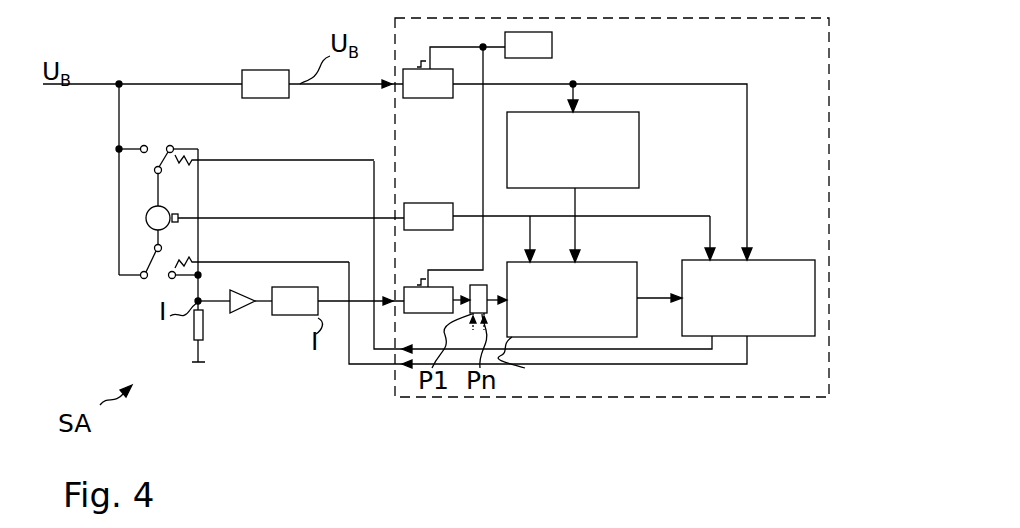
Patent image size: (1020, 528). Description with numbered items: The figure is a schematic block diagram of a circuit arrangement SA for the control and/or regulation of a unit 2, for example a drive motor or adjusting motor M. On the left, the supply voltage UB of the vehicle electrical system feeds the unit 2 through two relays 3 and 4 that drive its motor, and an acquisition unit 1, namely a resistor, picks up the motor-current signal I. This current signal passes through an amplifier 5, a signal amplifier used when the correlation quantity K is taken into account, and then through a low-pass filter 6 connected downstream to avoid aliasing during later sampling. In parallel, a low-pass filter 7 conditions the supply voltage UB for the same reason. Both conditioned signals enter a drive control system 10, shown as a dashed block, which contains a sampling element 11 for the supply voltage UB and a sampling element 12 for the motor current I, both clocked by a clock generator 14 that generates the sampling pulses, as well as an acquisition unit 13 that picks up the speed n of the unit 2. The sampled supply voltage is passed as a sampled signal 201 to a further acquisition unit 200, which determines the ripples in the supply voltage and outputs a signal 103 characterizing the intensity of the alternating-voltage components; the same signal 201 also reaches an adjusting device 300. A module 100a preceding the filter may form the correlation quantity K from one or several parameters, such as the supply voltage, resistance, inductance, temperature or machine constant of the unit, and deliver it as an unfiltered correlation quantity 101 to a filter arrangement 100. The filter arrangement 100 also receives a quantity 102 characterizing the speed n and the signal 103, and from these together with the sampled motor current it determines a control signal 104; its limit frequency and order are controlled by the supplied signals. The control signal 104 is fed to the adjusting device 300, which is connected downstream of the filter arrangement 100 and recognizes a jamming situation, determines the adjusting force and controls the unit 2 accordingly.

The acquisition unit 1 is at (192, 331).
The unit 2 is at (152, 209).
The relay 3 is at (253, 165).
The relay 4 is at (245, 270).
The amplifier 5 is at (253, 306).
The low-pass filter 6 is at (338, 301).
The low-pass filter 7 is at (322, 85).
The drive control system 10 is at (828, 70).
The sampling element 11 is at (454, 73).
The sampling element 12 is at (246, 217).
The acquisition unit 13 is at (557, 217).
The clock generator 14 is at (516, 46).
The filter arrangement 100 is at (603, 317).
The module 100a is at (484, 276).
The unfiltered correlation quantity 101 is at (529, 366).
The quantity characterizing the speed 102 is at (535, 246).
The signal characterizing the intensity of the alternating-voltage components 103 is at (576, 246).
The control signal 104 is at (644, 292).
The acquisition unit 200 is at (613, 152).
The sampled signal of the supply-system voltage 201 is at (574, 94).
The adjusting device 300 is at (757, 322).